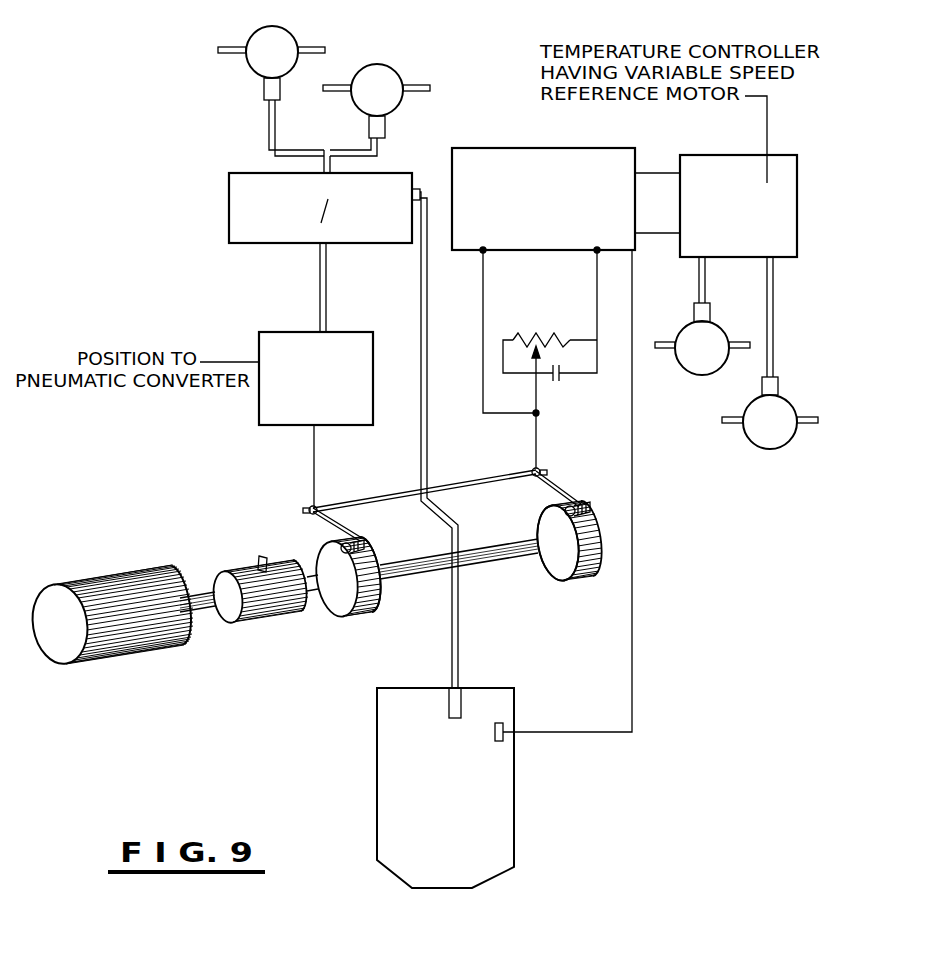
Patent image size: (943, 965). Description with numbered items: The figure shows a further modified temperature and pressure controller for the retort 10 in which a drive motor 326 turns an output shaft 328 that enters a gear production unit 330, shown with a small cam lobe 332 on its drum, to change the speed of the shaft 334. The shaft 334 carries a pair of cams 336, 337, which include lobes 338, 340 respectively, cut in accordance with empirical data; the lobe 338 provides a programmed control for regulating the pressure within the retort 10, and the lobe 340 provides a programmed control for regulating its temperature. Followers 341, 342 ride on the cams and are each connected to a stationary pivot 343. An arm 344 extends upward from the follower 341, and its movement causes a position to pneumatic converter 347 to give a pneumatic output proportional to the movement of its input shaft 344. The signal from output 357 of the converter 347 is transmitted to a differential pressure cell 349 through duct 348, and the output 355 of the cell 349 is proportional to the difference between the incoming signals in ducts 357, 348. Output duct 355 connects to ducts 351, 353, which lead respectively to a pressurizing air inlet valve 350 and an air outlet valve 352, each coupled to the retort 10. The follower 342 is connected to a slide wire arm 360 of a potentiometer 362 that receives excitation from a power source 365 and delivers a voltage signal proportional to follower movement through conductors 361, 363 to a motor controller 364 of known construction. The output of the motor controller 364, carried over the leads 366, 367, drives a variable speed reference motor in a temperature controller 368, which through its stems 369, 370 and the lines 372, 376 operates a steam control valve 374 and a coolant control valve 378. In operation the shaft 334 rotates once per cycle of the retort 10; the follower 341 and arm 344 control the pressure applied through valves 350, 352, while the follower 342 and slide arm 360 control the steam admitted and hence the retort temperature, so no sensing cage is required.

The retort 10 is at (377, 729).
The drive motor 326 is at (115, 578).
The output shaft 328 is at (207, 616).
The gear production unit 330 is at (255, 572).
The cam lobe 332 is at (259, 558).
The shaft 334 is at (310, 605).
The cam 336 is at (333, 614).
The cam 337 is at (553, 565).
The lobe 338 is at (376, 604).
The lobe 340 is at (590, 576).
The follower 341 is at (352, 535).
The follower 342 is at (580, 503).
The stationary pivot 343 is at (350, 503).
The arm 344 is at (313, 487).
The position to pneumatic converter 347 is at (373, 393).
The duct 348 is at (429, 360).
The differential pressure cell 349 is at (229, 207).
The pressurizing air inlet valve 350 is at (270, 27).
The duct 351 is at (268, 125).
The air outlet valve 352 is at (376, 65).
The duct 353 is at (375, 138).
The output duct 355 is at (332, 160).
The output 357 is at (326, 265).
The slide wire arm 360 is at (538, 440).
The conductor 361 is at (483, 296).
The potentiometer 362 is at (525, 332).
The conductor 363 is at (597, 278).
The motor controller 364 is at (573, 148).
The power source 365 is at (561, 381).
The lead 366 is at (667, 171).
The lead 367 is at (652, 238).
The temperature controller 368 is at (692, 156).
The valve stem 369 is at (699, 291).
The valve stem 370 is at (773, 291).
The line 372 is at (746, 342).
The steam control valve 374 is at (690, 365).
The line 376 is at (808, 415).
The coolant control valve 378 is at (750, 434).